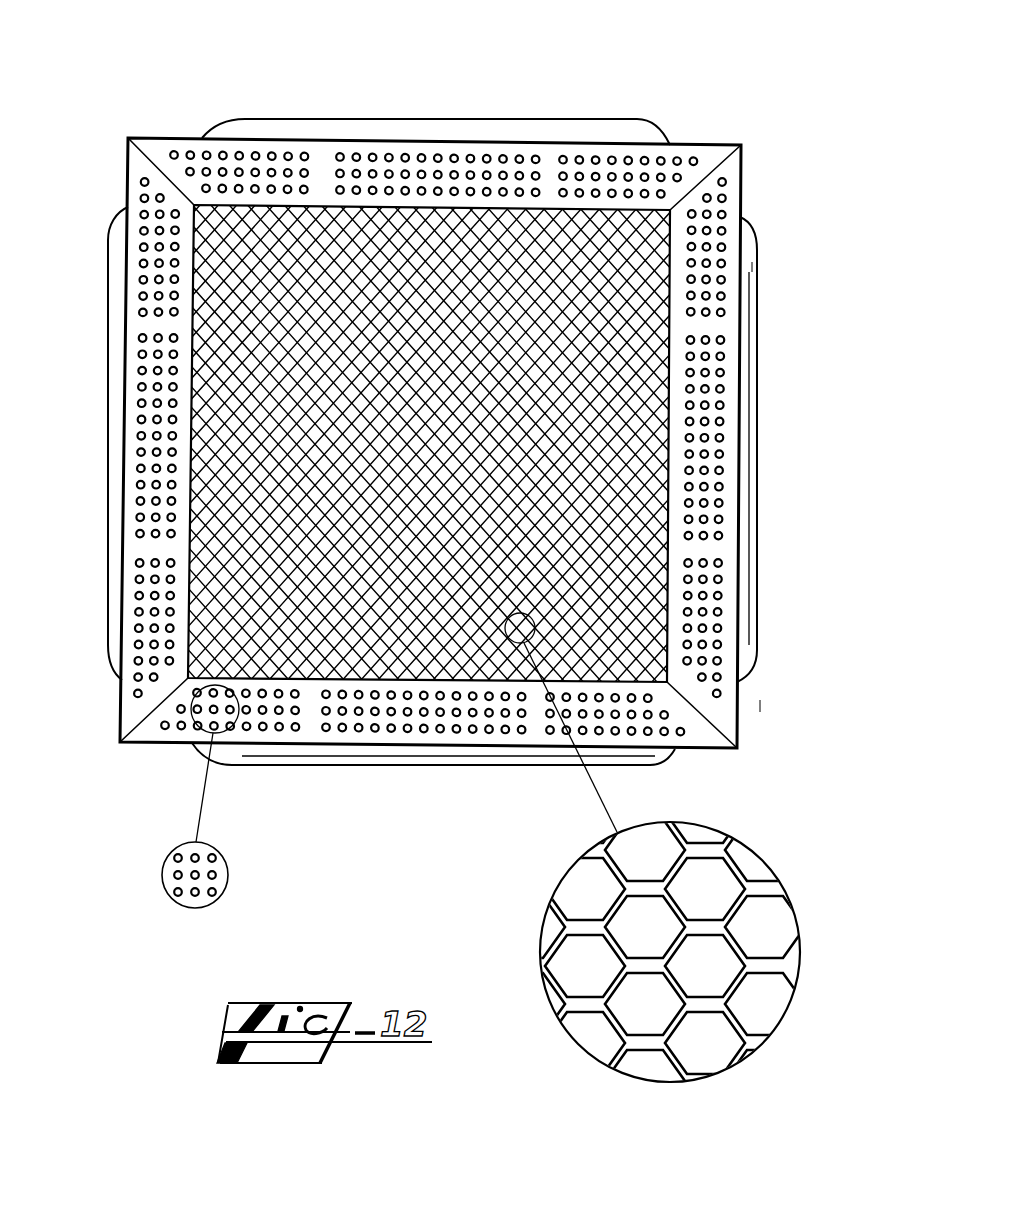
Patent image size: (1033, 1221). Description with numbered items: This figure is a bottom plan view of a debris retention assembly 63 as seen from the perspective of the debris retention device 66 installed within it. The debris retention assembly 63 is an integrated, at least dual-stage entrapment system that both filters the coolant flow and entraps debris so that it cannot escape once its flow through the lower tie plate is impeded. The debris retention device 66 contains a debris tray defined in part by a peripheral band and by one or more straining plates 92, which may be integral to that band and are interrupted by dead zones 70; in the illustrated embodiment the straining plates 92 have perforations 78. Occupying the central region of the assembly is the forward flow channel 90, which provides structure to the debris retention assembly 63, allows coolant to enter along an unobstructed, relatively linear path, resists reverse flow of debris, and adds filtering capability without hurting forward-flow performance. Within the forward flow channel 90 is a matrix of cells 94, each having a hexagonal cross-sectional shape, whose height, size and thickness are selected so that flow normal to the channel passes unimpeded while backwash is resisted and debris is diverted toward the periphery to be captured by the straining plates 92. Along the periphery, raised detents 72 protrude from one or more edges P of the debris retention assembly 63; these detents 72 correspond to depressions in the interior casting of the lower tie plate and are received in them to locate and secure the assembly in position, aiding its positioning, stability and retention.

The debris retention assembly 63 is at (708, 126).
The debris retention device 66 is at (162, 137).
The dead zones 70 is at (326, 158).
The raised detents 72 is at (443, 124).
The perforations 78 is at (166, 866).
The forward flow channel 90 is at (622, 400).
The straining plates 92 is at (740, 718).
The cylindrical cells 94 is at (586, 940).
The edges P is at (742, 217).